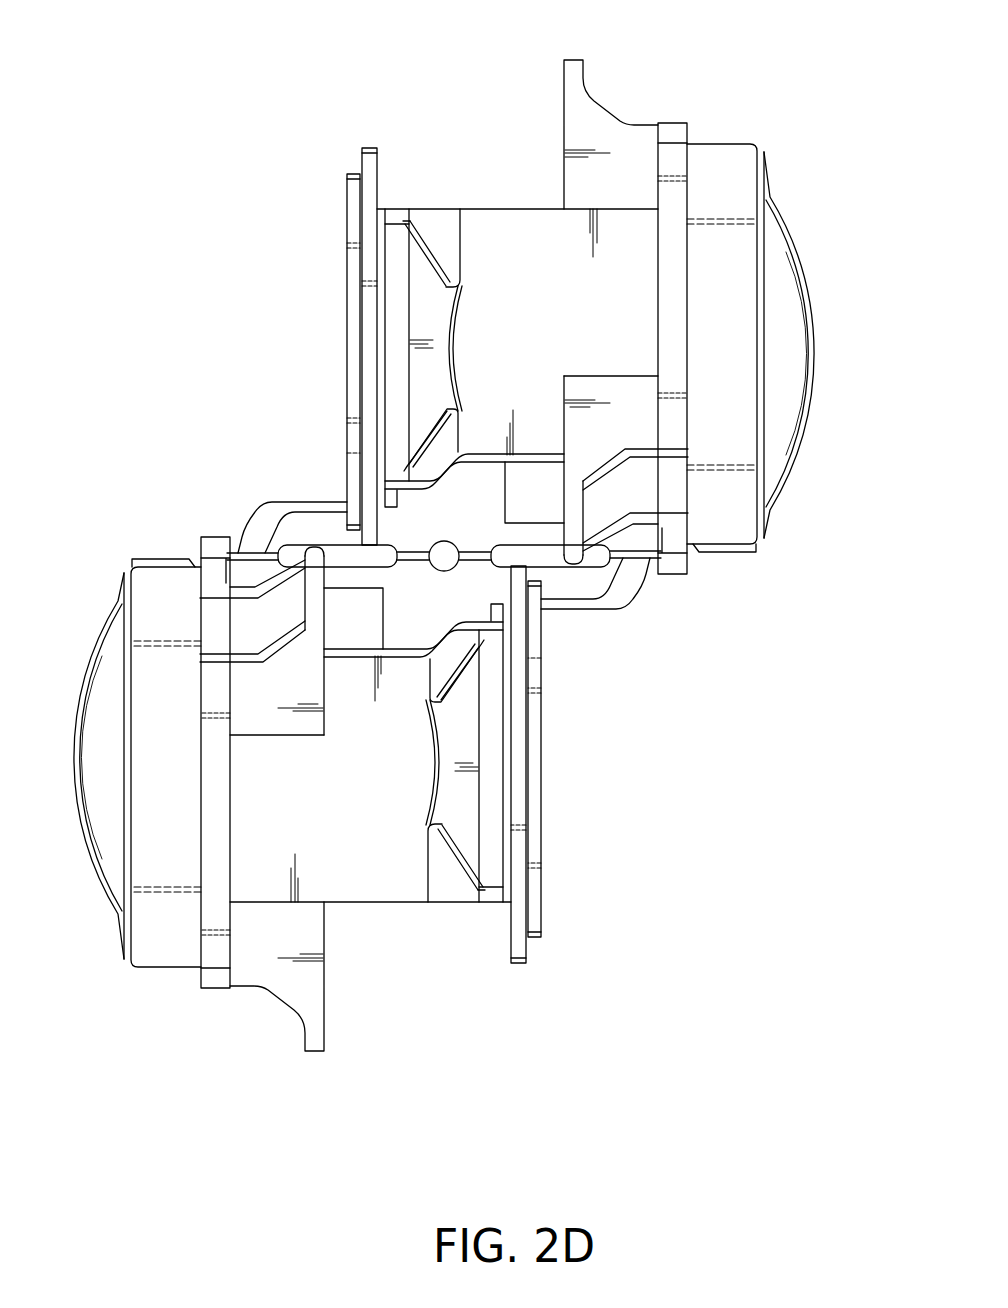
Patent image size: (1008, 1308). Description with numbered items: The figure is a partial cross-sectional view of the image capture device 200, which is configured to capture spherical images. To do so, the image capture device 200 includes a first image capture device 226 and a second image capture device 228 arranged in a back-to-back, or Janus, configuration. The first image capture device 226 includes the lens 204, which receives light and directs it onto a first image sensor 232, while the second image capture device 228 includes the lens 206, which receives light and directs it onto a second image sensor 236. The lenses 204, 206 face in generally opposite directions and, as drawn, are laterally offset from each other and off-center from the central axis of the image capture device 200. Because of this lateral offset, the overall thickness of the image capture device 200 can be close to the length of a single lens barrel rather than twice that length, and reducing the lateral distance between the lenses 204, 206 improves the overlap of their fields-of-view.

The image capture device 200 is at (333, 134).
The lens 204 is at (100, 733).
The lens 206 is at (790, 308).
The first image capture device 226 is at (208, 1027).
The second image capture device 228 is at (746, 74).
The first image sensor 232 is at (520, 772).
The second image sensor 236 is at (357, 336).